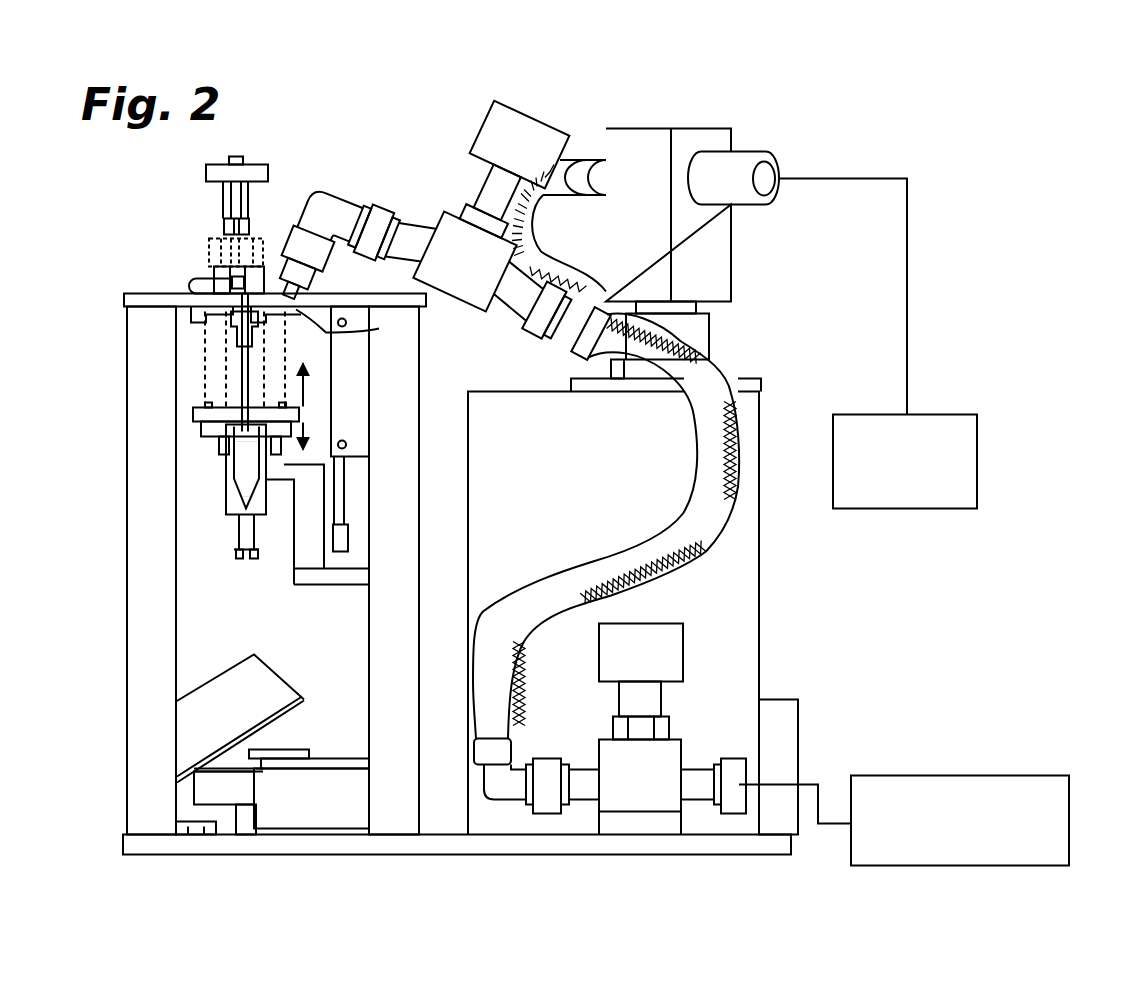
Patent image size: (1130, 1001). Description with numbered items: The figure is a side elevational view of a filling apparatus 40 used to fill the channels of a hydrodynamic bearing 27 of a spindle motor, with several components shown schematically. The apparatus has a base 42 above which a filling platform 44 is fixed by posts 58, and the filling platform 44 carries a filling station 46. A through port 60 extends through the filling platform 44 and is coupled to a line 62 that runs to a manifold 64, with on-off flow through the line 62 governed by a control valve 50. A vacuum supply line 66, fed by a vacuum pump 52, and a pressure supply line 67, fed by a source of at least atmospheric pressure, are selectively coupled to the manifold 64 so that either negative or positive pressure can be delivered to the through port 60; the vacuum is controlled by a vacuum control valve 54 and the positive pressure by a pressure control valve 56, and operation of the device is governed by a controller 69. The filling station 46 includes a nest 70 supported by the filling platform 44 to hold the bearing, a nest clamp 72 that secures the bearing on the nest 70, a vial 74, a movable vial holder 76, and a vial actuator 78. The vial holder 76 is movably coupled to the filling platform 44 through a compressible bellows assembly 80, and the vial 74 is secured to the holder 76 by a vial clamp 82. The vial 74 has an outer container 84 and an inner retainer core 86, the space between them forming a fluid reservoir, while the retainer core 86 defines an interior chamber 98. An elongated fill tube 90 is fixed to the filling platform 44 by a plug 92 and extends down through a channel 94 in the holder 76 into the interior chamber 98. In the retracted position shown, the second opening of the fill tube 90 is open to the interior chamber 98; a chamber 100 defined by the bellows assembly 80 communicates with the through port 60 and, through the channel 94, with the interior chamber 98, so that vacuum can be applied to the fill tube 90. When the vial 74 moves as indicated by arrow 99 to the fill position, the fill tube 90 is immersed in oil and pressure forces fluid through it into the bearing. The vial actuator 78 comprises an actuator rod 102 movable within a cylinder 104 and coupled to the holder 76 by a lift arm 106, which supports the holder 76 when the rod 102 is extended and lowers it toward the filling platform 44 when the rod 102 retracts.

The filling apparatus 40 is at (725, 97).
The base 42 is at (283, 843).
The filling platform 44 is at (345, 290).
The filling station 46 is at (290, 193).
The control valve 50 is at (527, 120).
The vacuum pump 52 is at (930, 413).
The vacuum control valve 54 is at (731, 357).
The pressure control valve 56 is at (683, 625).
The posts 58 is at (140, 560).
The through port 60 is at (354, 330).
The line 62 is at (1045, 774).
The manifold 64 is at (607, 288).
The vacuum supply line 66 is at (574, 157).
The pressure supply line 67 is at (737, 420).
The controller 69 is at (268, 677).
The nest 70 is at (193, 273).
The nest clamp 72 is at (262, 153).
The bearing 27 is at (208, 243).
The vial 74 is at (222, 495).
The movable vial holder 76 is at (193, 419).
The vial actuator 78 is at (350, 432).
The compressible bellows assembly 80 is at (202, 369).
The vial clamp 82 is at (238, 548).
The outer container 84 is at (247, 478).
The inner retainer core 86 is at (235, 456).
The fill tube 90 is at (242, 382).
The plug 92 is at (235, 325).
The channel 94 is at (262, 398).
The interior chamber 98 is at (235, 494).
The arrow 99 is at (300, 408).
The chamber 100 is at (213, 344).
The actuator rod 102 is at (343, 502).
The cylinder 104 is at (355, 445).
The lift arm 106 is at (297, 535).